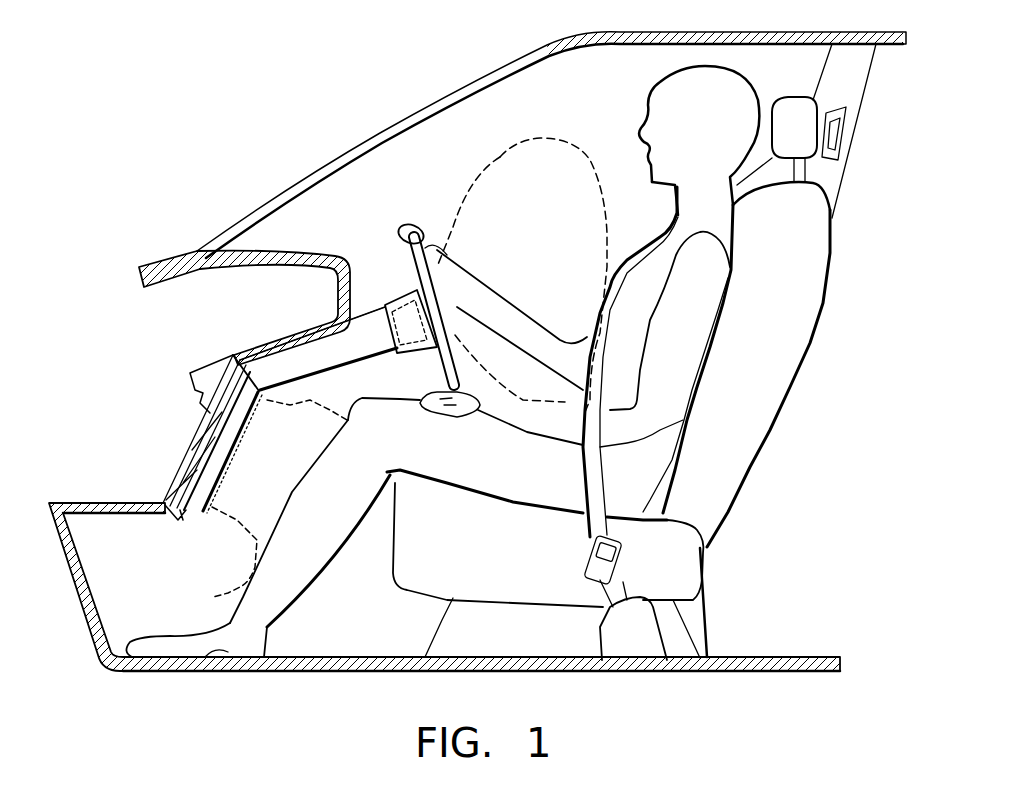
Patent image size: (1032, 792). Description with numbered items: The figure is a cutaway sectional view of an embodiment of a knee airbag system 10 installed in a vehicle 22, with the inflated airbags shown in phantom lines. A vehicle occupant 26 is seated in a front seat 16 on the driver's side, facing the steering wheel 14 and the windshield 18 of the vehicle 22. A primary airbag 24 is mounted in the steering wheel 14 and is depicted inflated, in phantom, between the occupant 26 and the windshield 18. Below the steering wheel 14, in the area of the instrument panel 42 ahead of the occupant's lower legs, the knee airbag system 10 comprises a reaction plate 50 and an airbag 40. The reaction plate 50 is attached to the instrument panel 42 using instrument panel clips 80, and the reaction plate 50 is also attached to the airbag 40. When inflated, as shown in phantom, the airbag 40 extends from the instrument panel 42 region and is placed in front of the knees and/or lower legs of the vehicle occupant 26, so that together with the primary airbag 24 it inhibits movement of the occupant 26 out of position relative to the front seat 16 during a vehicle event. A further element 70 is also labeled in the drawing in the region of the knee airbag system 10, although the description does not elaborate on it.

The knee airbag system 10 is at (180, 520).
The steering wheel 14 is at (446, 371).
The front seat 16 is at (757, 377).
The windshield 18 is at (395, 115).
The vehicle 22 is at (127, 245).
The primary airbag 24 is at (540, 132).
The vehicle occupant 26 is at (650, 102).
The airbag 40 is at (228, 592).
The instrument panel 42 is at (173, 461).
The reaction plate 50 is at (177, 513).
The tear seam 70 is at (202, 512).
The instrument panel clips 80 is at (197, 457).